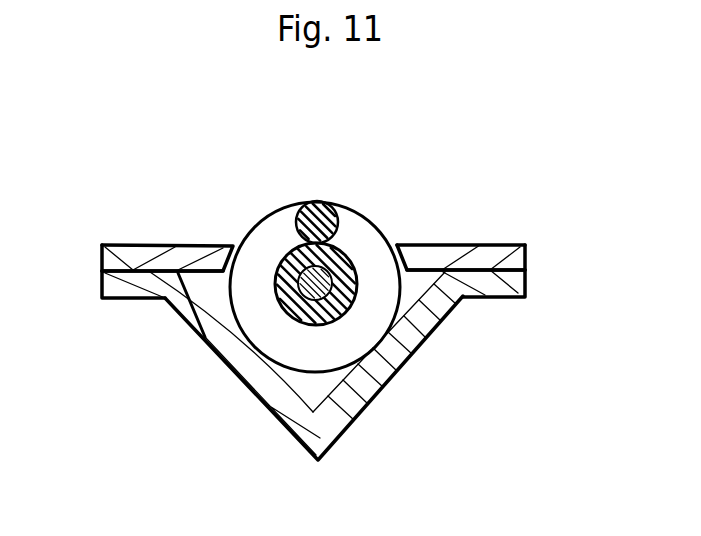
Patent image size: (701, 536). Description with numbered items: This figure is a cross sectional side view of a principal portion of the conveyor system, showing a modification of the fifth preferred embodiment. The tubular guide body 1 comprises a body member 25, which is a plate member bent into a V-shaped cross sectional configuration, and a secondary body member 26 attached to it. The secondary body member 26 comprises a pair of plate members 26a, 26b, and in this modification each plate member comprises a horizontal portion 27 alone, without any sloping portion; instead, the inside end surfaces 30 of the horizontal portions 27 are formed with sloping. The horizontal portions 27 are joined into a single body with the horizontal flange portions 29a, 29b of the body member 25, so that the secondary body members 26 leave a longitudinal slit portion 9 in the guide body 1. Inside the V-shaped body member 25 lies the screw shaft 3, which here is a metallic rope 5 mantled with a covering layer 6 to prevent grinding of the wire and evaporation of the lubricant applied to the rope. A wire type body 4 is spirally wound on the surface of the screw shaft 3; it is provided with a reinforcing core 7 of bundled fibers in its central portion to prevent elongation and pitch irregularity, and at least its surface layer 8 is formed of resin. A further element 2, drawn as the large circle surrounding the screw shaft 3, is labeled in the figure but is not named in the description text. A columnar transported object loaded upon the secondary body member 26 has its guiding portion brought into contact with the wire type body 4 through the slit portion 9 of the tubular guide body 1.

The tubular guide body 1 is at (490, 223).
The cylindrical body 2 is at (289, 373).
The screw shaft 3 is at (342, 325).
The wire type body 4 is at (338, 205).
The metallic rope 5 is at (310, 326).
The covering layer 6 is at (247, 342).
The reinforcing core 7 is at (307, 200).
The surface layer 8 is at (365, 242).
The slit portion 9 is at (378, 262).
The body member 25 is at (388, 387).
The secondary body member 26 is at (465, 242).
The plate member 26a is at (142, 245).
The plate member 26b is at (513, 242).
The horizontal portion 27 is at (178, 245).
The horizontal flange portion 29a is at (123, 300).
The horizontal flange portion 29b is at (497, 300).
The inside end surface 30 is at (237, 262).